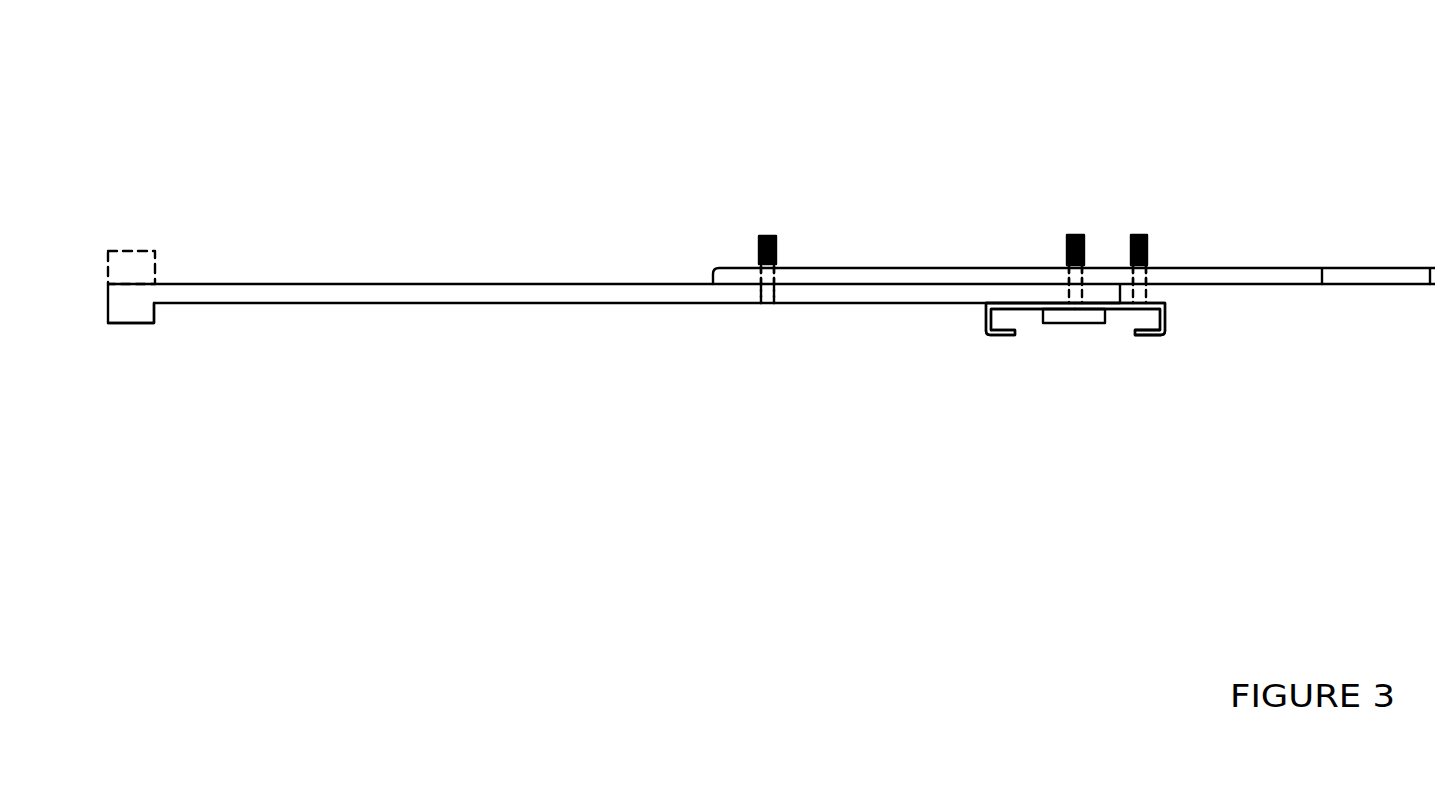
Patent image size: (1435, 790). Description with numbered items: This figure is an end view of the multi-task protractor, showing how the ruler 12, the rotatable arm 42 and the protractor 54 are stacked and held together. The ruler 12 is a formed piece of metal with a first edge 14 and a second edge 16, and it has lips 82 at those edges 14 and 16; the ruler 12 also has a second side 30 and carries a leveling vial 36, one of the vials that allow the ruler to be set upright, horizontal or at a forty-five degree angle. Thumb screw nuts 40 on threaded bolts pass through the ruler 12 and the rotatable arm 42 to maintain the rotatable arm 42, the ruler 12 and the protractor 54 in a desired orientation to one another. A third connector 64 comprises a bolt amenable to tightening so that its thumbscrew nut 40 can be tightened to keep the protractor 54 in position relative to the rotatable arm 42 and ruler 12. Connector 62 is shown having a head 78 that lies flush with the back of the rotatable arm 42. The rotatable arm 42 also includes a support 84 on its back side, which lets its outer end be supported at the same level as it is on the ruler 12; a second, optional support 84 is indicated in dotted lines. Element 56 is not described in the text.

The ruler 12 is at (1152, 426).
The first edge 14 is at (930, 338).
The second edge 16 is at (1222, 337).
The second side 30 is at (969, 430).
The leveling vial 36 is at (1016, 479).
The thumb screw nut 40 is at (953, 183).
The rotatable arm 42 is at (771, 334).
The protractor 54 is at (1074, 223).
The fastener hole 56 is at (967, 154).
The connector 62 is at (657, 222).
The third connector 64 is at (1192, 194).
The head 78 is at (677, 379).
The lip 82 is at (1077, 394).
The support 84 is at (243, 274).